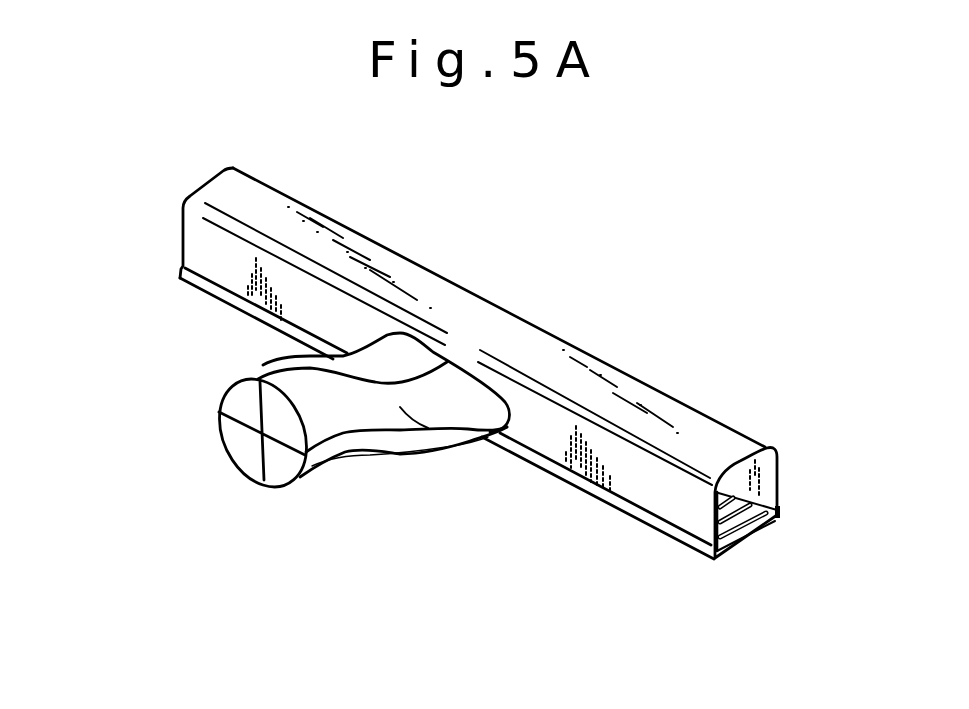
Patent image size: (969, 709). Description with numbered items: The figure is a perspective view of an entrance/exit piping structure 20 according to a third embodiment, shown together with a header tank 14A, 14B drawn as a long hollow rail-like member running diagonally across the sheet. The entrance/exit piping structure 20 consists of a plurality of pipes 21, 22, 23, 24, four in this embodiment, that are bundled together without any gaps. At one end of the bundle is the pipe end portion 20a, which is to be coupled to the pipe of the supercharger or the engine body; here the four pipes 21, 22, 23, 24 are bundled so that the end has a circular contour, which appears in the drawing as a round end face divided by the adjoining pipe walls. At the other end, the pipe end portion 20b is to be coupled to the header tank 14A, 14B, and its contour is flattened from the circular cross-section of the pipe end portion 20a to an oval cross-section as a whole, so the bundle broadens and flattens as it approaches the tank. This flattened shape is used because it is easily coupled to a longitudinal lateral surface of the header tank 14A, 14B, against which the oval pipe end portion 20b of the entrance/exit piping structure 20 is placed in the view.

The header tank 14A is at (507, 363).
The header tank 14B is at (632, 391).
The entrance/exit piping structure 20 is at (316, 399).
The pipe end portion 20a is at (280, 487).
The pipe end portion 20b is at (463, 367).
The pipe 21 is at (367, 445).
The pipe 22 is at (460, 447).
The pipe 23 is at (266, 362).
The pipe 24 is at (246, 443).